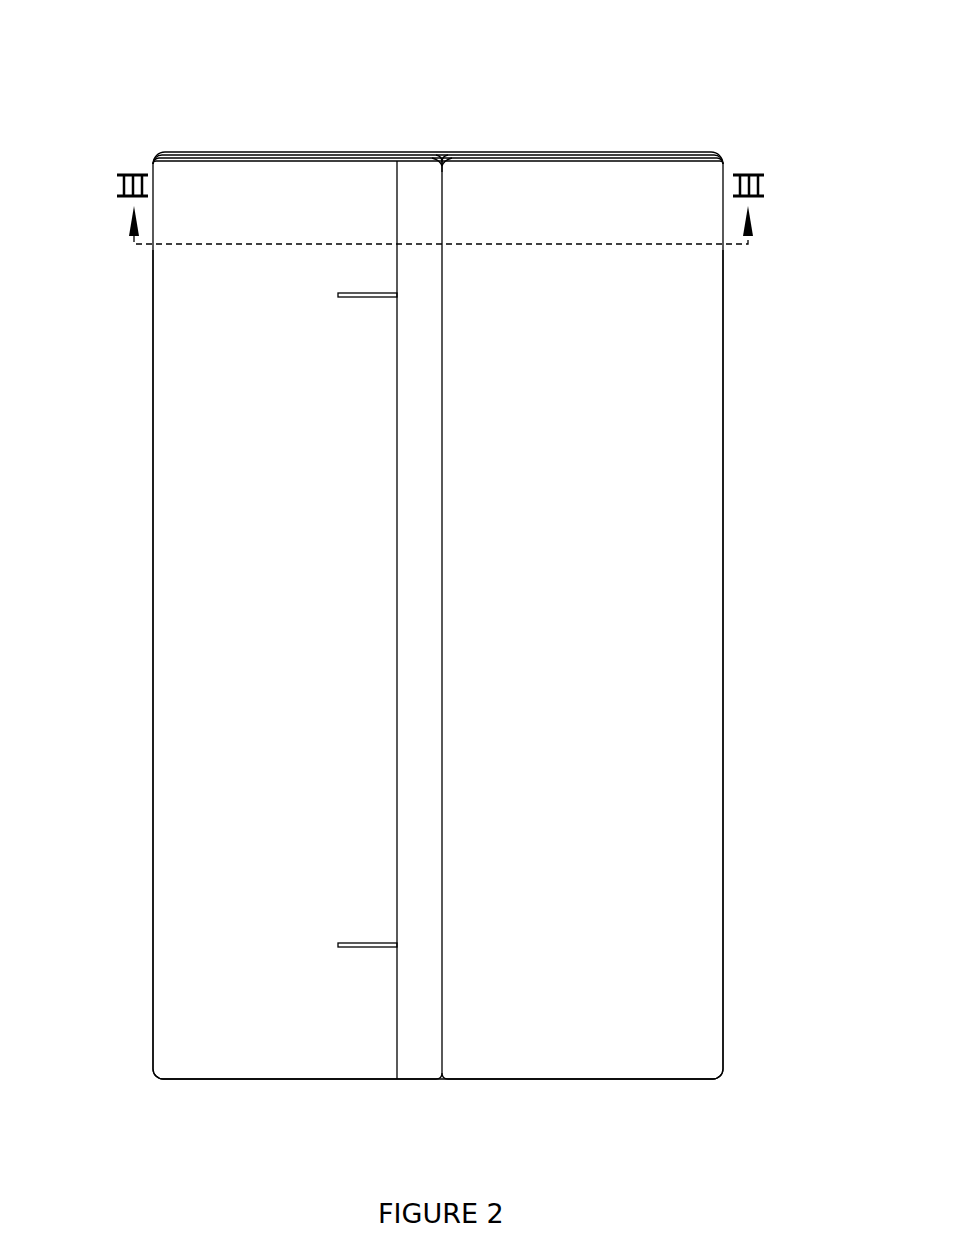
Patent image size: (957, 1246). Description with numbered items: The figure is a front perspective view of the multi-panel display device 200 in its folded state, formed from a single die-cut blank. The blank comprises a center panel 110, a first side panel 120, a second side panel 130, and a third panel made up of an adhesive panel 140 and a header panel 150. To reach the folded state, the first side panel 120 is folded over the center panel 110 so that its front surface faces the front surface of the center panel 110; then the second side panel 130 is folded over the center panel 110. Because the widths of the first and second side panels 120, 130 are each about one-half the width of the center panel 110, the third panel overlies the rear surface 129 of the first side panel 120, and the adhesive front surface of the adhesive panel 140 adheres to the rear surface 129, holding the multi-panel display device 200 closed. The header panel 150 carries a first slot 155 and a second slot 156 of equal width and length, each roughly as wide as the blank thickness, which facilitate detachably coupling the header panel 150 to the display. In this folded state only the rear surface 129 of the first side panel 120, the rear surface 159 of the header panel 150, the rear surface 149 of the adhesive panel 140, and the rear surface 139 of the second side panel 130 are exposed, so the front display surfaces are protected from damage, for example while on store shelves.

The multi-panel display device 200 is at (165, 103).
The first side panel 120 is at (372, 157).
The header panel 150 is at (250, 190).
The adhesive panel 140 is at (410, 190).
The center panel 110 is at (444, 175).
The second side panel 130 is at (693, 375).
The first slot 155 is at (365, 291).
The second slot 156 is at (365, 942).
The rear surface of the first side panel 129 is at (166, 1009).
The rear surface of the header panel 159 is at (242, 992).
The rear surface of the adhesive panel 149 is at (413, 992).
The rear surface of the second side panel 139 is at (678, 992).